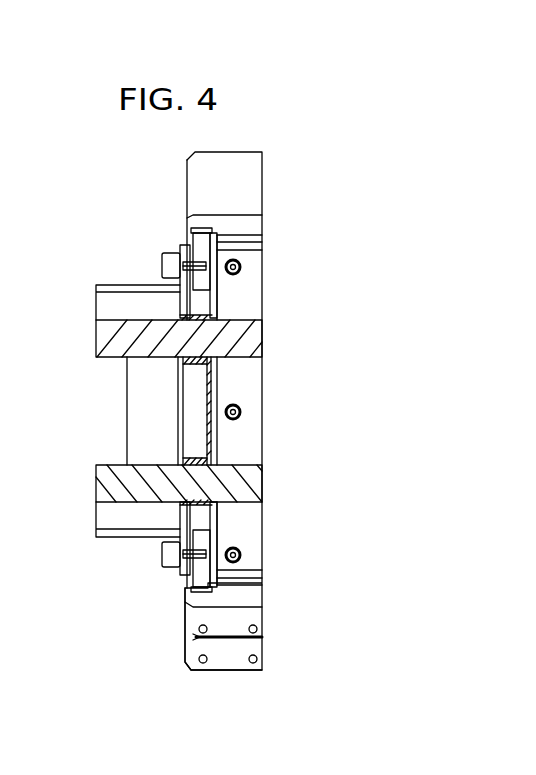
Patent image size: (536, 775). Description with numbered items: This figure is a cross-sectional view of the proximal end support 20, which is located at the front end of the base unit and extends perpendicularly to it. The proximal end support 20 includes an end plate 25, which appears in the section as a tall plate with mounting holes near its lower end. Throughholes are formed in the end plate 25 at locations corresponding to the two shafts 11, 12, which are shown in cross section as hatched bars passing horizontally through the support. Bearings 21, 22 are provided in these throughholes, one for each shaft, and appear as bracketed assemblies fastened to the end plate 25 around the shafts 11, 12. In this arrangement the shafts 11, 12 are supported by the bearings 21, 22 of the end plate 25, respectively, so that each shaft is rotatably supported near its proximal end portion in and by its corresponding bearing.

The proximal end support 20 is at (265, 151).
The shaft 11 is at (258, 490).
The shaft 12 is at (257, 346).
The bearing 21 is at (200, 505).
The bearing 22 is at (197, 307).
The end plate 25 is at (233, 654).